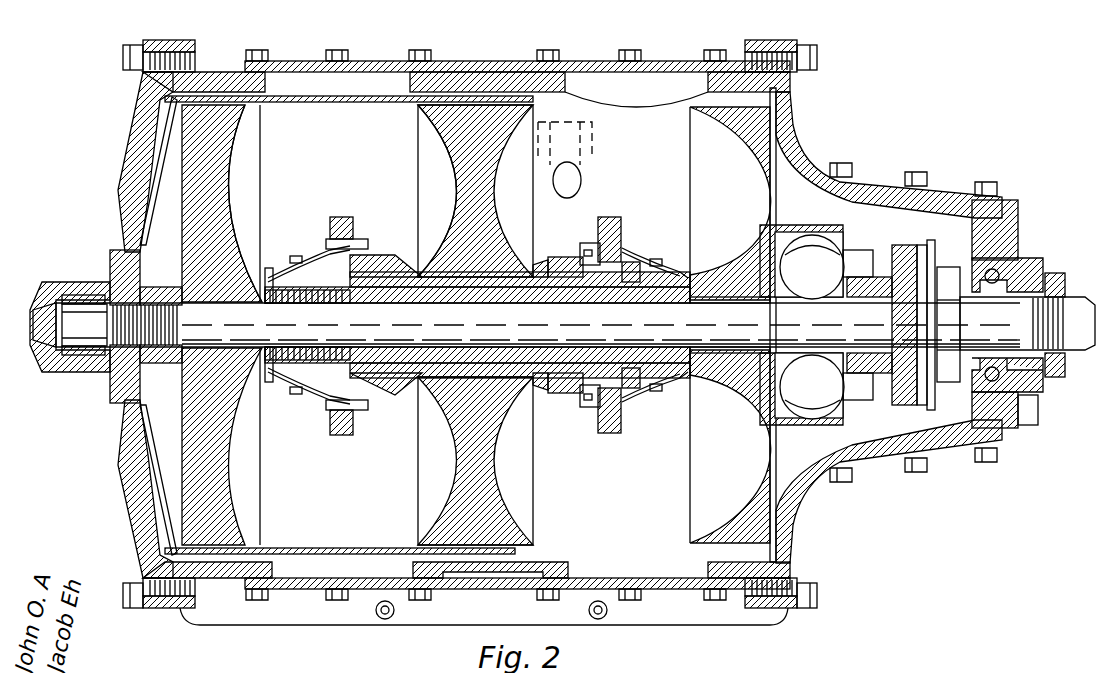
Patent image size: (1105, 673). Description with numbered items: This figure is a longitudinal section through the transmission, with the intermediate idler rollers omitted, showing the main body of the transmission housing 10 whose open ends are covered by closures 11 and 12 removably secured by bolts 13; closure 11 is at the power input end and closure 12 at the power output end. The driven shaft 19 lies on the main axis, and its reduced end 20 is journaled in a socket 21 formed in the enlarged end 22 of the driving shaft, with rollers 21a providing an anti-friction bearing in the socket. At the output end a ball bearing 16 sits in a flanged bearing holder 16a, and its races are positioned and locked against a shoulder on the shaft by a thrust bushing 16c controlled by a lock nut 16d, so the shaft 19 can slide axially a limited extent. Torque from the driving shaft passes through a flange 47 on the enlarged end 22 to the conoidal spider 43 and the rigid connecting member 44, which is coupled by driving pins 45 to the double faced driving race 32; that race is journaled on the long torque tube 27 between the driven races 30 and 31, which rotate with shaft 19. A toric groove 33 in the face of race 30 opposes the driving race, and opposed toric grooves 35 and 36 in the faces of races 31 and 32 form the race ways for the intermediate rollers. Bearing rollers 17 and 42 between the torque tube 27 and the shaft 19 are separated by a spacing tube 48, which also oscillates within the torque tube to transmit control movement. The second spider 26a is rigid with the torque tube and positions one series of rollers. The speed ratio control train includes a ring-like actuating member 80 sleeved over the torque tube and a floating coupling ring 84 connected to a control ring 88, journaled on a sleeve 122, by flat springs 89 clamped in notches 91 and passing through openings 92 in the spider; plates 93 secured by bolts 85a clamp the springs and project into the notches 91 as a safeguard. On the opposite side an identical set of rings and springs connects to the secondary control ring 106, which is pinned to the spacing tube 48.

The main body of transmission housing 10 is at (487, 72).
The closure 11 is at (128, 158).
The closure 12 is at (812, 165).
The bolts 13 is at (822, 582).
The bearing 16 is at (1005, 282).
The flanged bearing holder 16a is at (1020, 410).
The thrust bushing 16c is at (1042, 292).
The lock nut 16d is at (1056, 378).
The bearing rollers 17 is at (538, 325).
The driven shaft 19 is at (1073, 350).
The reduced end 20 is at (80, 356).
The socket 21 is at (45, 316).
The rollers 21a is at (88, 296).
The enlarged end 22 is at (96, 372).
The second spider 26a is at (353, 226).
The torque tube 27 is at (562, 250).
The driven race 30 is at (736, 125).
The driven race 31 is at (252, 125).
The double faced driving race 32 is at (440, 131).
The rotor disc 33 is at (724, 170).
The toric groove 35 is at (228, 182).
The toric groove 36 is at (455, 175).
The bearing rollers 42 is at (307, 325).
The conoidal flange or spider 43 is at (145, 218).
The rigid connecting member 44 is at (360, 100).
The driving pins 45 is at (222, 446).
The flange 47 is at (120, 400).
The spacing tube 48 is at (520, 325).
The ring-like actuating member 80 is at (323, 270).
The floating coupling ring 84 is at (296, 256).
The bolts 85a is at (660, 391).
The control ring 88 is at (575, 400).
The flat springs 89 is at (305, 392).
The notches 91 is at (590, 243).
The openings 92 is at (612, 258).
The plates 93 is at (631, 262).
The secondary control ring 106 is at (390, 262).
The sleeve 122 is at (550, 262).